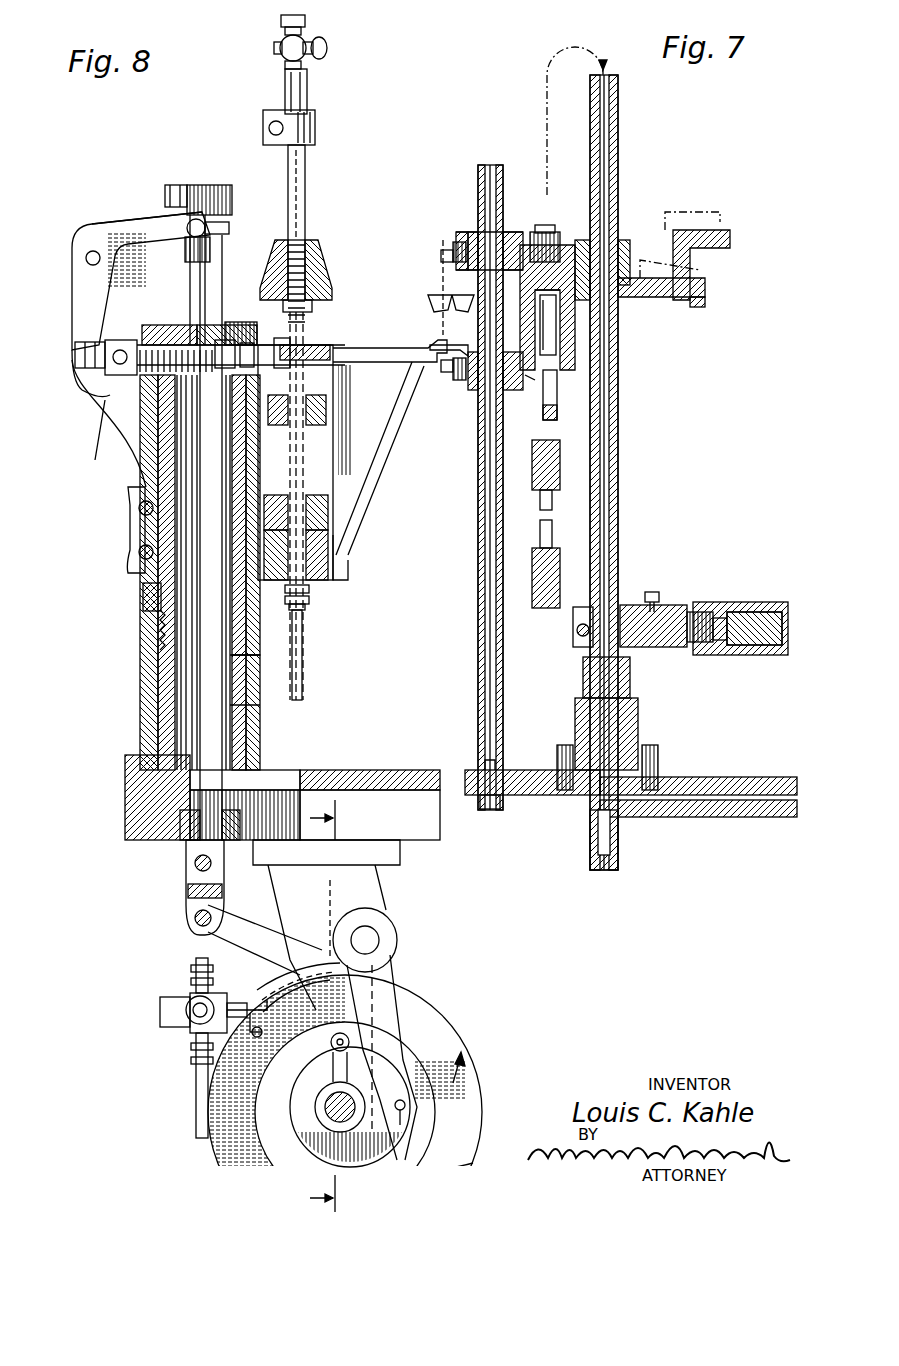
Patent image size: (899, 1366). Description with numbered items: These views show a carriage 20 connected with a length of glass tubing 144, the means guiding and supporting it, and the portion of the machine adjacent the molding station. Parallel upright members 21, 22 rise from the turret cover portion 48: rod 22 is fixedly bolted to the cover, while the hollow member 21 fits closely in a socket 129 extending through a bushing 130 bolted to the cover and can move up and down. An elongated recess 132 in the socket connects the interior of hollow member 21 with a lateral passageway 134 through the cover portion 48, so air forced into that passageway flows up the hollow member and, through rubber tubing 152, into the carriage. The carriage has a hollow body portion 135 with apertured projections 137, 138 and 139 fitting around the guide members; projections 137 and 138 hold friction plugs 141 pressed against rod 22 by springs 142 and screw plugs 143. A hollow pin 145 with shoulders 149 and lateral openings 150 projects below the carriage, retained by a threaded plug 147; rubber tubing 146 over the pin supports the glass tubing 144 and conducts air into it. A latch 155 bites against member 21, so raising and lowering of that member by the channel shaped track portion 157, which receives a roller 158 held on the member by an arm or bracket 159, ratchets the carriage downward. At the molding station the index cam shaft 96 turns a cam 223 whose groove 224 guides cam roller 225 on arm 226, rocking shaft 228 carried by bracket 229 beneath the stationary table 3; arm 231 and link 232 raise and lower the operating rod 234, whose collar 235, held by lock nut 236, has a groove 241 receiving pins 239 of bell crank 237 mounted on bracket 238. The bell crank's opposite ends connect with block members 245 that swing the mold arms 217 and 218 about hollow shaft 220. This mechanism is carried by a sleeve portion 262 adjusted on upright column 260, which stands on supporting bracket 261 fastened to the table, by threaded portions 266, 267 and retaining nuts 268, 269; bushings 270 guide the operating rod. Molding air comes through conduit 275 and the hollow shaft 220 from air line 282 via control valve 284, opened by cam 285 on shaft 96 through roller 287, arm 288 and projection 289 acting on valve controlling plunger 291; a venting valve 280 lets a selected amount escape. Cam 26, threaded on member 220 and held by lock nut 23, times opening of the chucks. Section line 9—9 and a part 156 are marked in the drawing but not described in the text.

In FIG. 8, the table 3 is at (338, 770).
In FIG. 8, the section line 9 is at (332, 1006).
In FIG. 7, the carriage 20 is at (527, 378).
In FIG. 7, the hollow upright member 21 is at (618, 440).
In FIG. 7, the upright member 22 is at (478, 542).
In FIG. 8, the lock nut 23 is at (312, 306).
In FIG. 8, the cam 26 is at (318, 258).
In FIG. 7, the turret cover portion 48 is at (690, 772).
In FIG. 8, the index cam shaft 96 is at (325, 1118).
In FIG. 7, the socket 129 is at (630, 680).
In FIG. 7, the bushing 130 is at (638, 712).
In FIG. 7, the elongated recess 132 is at (618, 845).
In FIG. 7, the lateral passageway 134 is at (740, 798).
In FIG. 7, the hollow body portion 135 is at (575, 325).
In FIG. 7, the apertured projection 137 is at (462, 232).
In FIG. 7, the apertured projection 138 is at (462, 345).
In FIG. 7, the apertured projection 139 is at (630, 248).
In FIG. 7, the friction plugs 141 is at (478, 252).
In FIG. 7, the springs 142 is at (453, 248).
In FIG. 7, the screw plugs 143 is at (441, 258).
In FIG. 7, the glass tubing 144 is at (430, 292).
In FIG. 7, the hollow pin 145 is at (557, 398).
In FIG. 7, the rubber tubing 146 is at (560, 500).
In FIG. 7, the plug 147 is at (548, 225).
In FIG. 7, the shoulders 149 is at (538, 312).
In FIG. 7, the lateral openings 150 is at (538, 330).
In FIG. 7, the rubber tubing 152 is at (547, 73).
In FIG. 7, the supporting member or latch 155 is at (690, 288).
In FIG. 7, the bracket 156 is at (725, 232).
In FIG. 7, the channel shaped track portion 157 is at (735, 598).
In FIG. 7, the roller 158 is at (700, 613).
In FIG. 7, the arm or bracket 159 is at (630, 607).
In FIG. 8, the mold arm 217 is at (340, 515).
In FIG. 8, the mold arm 218 is at (345, 548).
In FIG. 8, the hollow upright shaft 220 is at (310, 470).
In FIG. 8, the cam 223 is at (440, 1030).
In FIG. 8, the groove 224 is at (405, 1120).
In FIG. 8, the cam roller 225 is at (420, 1105).
In FIG. 8, the arm 226 is at (383, 1010).
In FIG. 8, the shaft 228 is at (378, 940).
In FIG. 8, the bracket 229 is at (375, 880).
In FIG. 8, the arm 231 is at (244, 938).
In FIG. 8, the link 232 is at (186, 892).
In FIG. 8, the operating rod 234 is at (195, 688).
In FIG. 8, the collar 235 is at (80, 207).
In FIG. 8, the lock nut 236 is at (175, 185).
In FIG. 8, the bell crank 237 is at (90, 296).
In FIG. 8, the bracket 238 is at (100, 400).
In FIG. 8, the pins 239 is at (205, 236).
In FIG. 8, the groove 241 is at (232, 203).
In FIG. 8, the block members 245 is at (117, 365).
In FIG. 8, the upright column 260 is at (162, 530).
In FIG. 8, the supporting bracket 261 is at (265, 682).
In FIG. 8, the sleeve portion 262 is at (138, 478).
In FIG. 8, the threaded portion 266 is at (160, 628).
In FIG. 8, the threaded portion 267 is at (158, 325).
In FIG. 8, the retaining nut 268 is at (143, 596).
In FIG. 8, the retaining nut 269 is at (245, 310).
In FIG. 8, the bushings 270 is at (135, 445).
In FIG. 8, the conduit 275 is at (309, 598).
In FIG. 8, the by-pass or venting valve 280 is at (305, 42).
In FIG. 8, the air line 282 is at (195, 1118).
In FIG. 8, the control valve 284 is at (190, 1010).
In FIG. 8, the cam 285 is at (270, 1110).
In FIG. 8, the roller 287 is at (320, 1068).
In FIG. 8, the arm 288 is at (299, 1032).
In FIG. 8, the projection 289 is at (330, 975).
In FIG. 8, the valve controlling plunger 291 is at (268, 990).